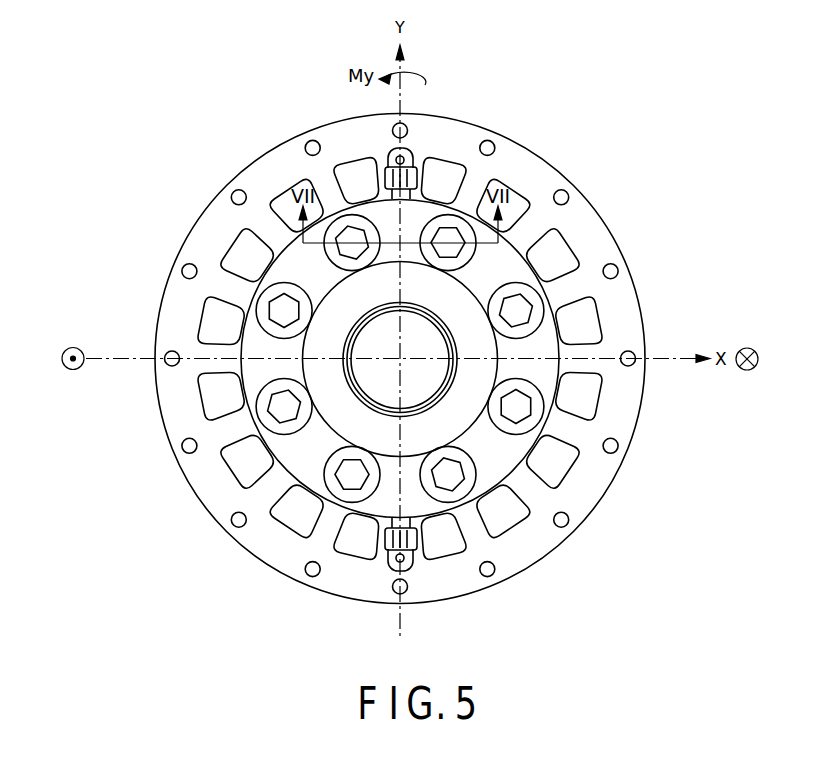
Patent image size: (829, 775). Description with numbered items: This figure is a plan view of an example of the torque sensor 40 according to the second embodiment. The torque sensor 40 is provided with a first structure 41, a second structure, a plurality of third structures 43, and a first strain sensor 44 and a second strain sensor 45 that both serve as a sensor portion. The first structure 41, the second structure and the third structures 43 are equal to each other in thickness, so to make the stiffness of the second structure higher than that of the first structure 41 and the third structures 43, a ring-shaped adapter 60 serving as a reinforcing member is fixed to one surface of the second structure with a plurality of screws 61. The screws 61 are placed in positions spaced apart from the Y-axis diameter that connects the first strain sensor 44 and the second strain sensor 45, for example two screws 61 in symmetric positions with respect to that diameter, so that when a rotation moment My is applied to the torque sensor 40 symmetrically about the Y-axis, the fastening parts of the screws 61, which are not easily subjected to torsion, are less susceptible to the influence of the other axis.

The torque sensor 40 is at (512, 130).
The first structure 41 is at (260, 173).
The third structures 43 is at (230, 292).
The first strain sensor 44 is at (384, 145).
The second strain sensor 45 is at (424, 566).
The adapter 60 is at (503, 267).
The screws 61 is at (439, 270).